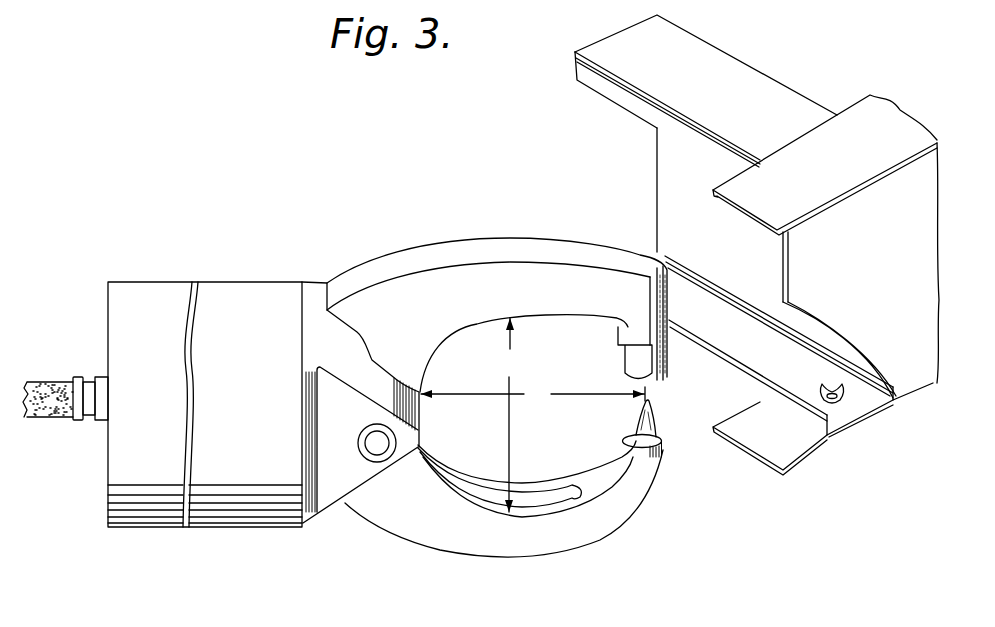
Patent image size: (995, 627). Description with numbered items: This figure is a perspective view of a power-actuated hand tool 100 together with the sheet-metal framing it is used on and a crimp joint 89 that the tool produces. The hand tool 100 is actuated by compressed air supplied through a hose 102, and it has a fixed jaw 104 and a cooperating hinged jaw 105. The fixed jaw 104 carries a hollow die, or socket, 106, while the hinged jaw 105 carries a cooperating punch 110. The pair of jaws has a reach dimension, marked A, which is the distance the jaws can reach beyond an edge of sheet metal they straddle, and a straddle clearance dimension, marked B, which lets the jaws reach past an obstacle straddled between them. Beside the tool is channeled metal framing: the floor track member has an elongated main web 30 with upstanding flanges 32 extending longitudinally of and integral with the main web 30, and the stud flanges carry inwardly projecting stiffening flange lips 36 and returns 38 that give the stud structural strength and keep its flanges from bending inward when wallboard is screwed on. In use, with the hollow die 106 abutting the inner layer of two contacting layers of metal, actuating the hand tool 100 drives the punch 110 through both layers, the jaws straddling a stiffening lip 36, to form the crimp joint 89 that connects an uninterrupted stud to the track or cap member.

The hand tool 100 is at (341, 263).
The hose 102 is at (50, 383).
The fixed jaw 104 is at (511, 250).
The hinged jaw 105 is at (460, 537).
The hollow die 106 is at (625, 357).
The punch 110 is at (630, 430).
The main web 30 is at (896, 257).
The upstanding flanges 32 is at (887, 149).
The stiffening flange lips 36 is at (633, 97).
The returns 38 is at (843, 433).
The crimp joint 89 is at (832, 378).